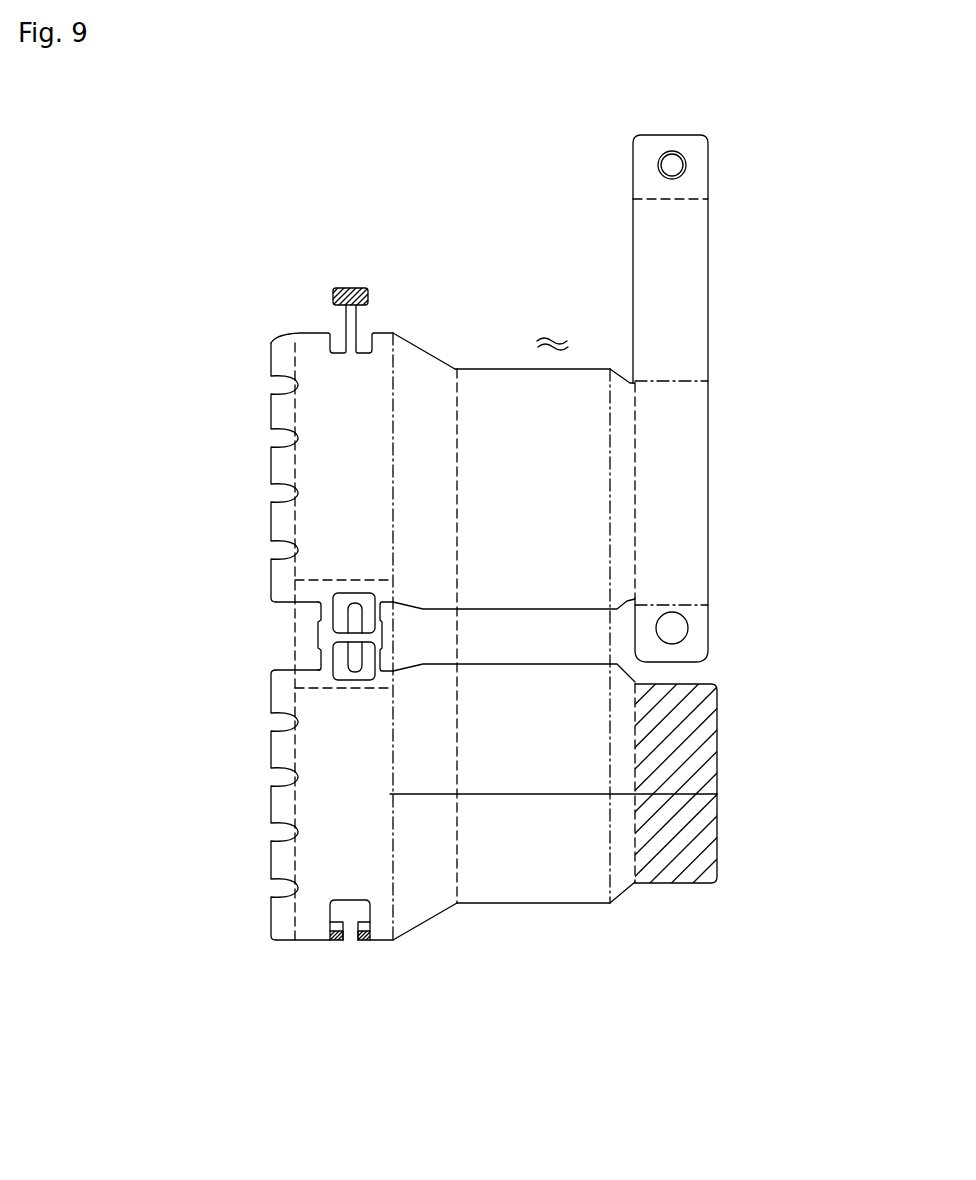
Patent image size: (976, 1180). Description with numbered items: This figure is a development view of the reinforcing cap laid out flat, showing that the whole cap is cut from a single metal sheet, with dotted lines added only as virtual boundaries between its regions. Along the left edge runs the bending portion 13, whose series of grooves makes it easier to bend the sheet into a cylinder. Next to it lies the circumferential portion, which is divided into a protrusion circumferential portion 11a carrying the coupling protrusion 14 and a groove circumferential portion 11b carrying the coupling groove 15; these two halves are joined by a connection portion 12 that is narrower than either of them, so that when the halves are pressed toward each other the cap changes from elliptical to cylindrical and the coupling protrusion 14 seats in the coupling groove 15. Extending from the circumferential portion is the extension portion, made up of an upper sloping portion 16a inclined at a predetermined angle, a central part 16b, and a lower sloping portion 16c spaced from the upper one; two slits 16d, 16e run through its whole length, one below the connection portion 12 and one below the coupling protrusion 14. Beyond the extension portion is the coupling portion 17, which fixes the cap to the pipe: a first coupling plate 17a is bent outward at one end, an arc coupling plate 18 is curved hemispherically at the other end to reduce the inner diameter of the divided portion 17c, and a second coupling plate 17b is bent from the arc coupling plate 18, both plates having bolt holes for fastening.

The protrusion circumferential portion 11a is at (313, 343).
The groove circumferential portion 11b is at (308, 925).
The connection portion 12 is at (310, 593).
The bending portion 13 is at (282, 413).
The coupling protrusion 14 is at (353, 287).
The coupling groove 15 is at (349, 910).
The upper sloping portion 16a is at (432, 902).
The central part 16b is at (543, 888).
The lower sloping portion 16c is at (623, 878).
The slit 16d is at (538, 630).
The slit 16e is at (553, 336).
The coupling portion 17 is at (690, 487).
The first coupling plate 17a is at (698, 633).
The second coupling plate 17b is at (697, 165).
The divided portion 17c is at (707, 768).
The arc coupling plate 18 is at (697, 297).